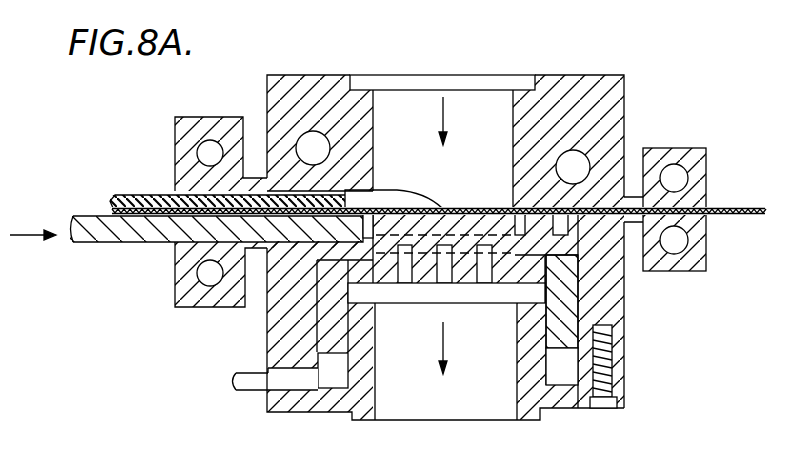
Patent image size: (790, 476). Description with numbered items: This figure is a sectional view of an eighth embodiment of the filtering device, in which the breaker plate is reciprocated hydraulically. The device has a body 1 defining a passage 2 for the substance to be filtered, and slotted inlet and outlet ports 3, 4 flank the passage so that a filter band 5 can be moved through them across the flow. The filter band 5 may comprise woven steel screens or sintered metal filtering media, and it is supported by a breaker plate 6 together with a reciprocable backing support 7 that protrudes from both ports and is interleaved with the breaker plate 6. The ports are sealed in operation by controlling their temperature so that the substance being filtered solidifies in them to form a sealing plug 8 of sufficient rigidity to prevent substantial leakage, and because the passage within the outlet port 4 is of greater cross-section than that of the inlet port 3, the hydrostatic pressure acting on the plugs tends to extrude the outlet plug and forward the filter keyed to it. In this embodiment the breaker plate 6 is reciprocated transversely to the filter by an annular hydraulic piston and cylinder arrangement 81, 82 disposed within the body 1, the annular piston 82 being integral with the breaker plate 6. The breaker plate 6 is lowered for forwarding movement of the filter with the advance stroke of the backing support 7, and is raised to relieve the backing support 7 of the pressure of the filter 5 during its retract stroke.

The body 1 is at (563, 80).
The passage 2 is at (487, 100).
The inlet port 3 is at (683, 158).
The outlet port 4 is at (177, 134).
The filter band 5 is at (739, 204).
The breaker plate 6 is at (407, 285).
The backing support 7 is at (118, 241).
The sealing plug 8 is at (137, 192).
The hydraulic cylinder 81 is at (567, 369).
The annular piston 82 is at (560, 317).